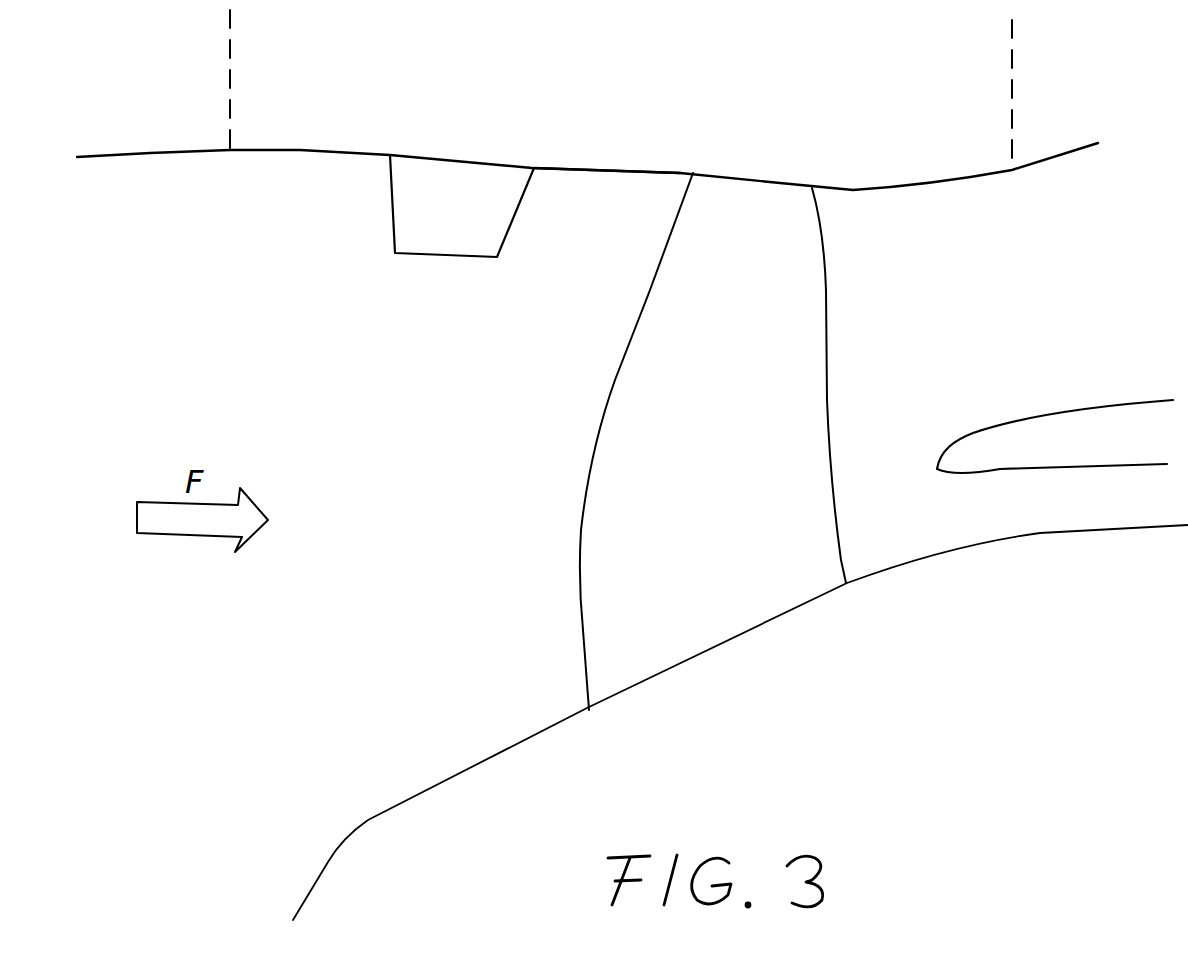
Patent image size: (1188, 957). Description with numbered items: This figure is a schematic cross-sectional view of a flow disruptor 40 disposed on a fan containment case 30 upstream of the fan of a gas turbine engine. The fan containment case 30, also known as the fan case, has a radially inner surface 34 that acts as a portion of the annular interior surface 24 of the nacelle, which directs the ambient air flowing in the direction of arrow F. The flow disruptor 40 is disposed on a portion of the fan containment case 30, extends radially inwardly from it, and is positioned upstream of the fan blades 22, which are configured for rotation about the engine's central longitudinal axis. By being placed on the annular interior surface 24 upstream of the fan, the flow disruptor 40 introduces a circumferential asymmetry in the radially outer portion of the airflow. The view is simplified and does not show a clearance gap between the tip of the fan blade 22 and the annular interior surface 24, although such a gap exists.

The fan blades 22 is at (759, 565).
The annular interior surface 24 is at (227, 173).
The fan containment case 30 is at (998, 78).
The radially inner surface 34 is at (568, 170).
The flow disruptor 40 is at (446, 289).